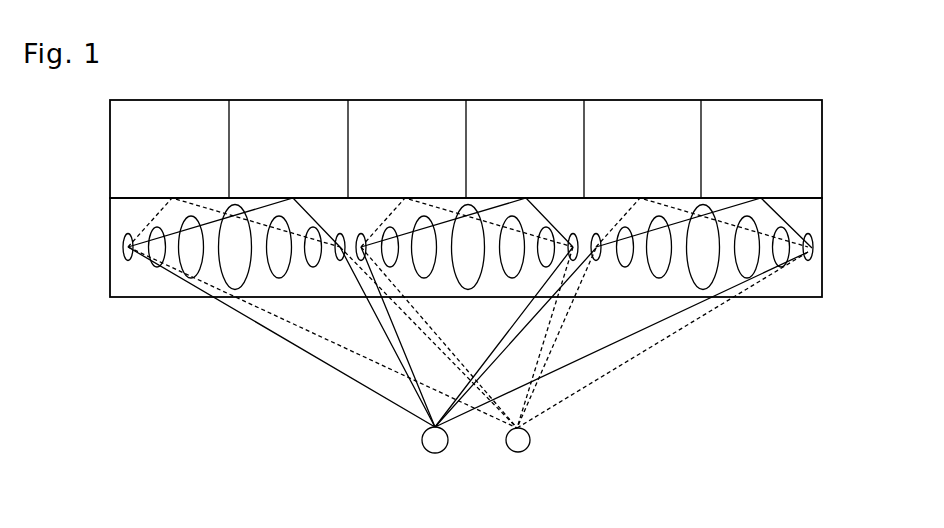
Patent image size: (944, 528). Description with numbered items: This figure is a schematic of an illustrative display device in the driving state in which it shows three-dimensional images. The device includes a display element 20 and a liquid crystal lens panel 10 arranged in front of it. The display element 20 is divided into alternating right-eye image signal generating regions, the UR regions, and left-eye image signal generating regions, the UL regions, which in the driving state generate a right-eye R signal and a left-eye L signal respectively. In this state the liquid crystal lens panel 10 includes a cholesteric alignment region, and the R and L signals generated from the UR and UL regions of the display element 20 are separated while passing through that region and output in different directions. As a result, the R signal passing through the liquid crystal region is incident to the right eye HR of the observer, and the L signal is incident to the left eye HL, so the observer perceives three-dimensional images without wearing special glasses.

The liquid crystal lens panel 10 is at (803, 278).
The display element 20 is at (807, 143).
The left eye HL is at (438, 455).
The right eye HR is at (523, 455).